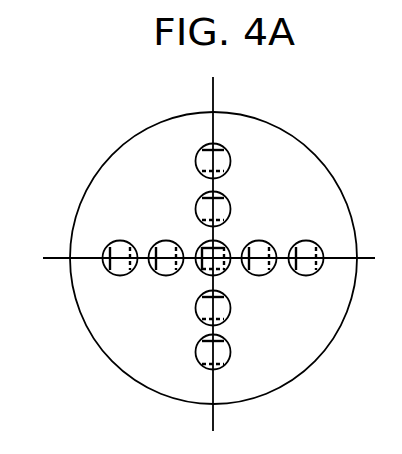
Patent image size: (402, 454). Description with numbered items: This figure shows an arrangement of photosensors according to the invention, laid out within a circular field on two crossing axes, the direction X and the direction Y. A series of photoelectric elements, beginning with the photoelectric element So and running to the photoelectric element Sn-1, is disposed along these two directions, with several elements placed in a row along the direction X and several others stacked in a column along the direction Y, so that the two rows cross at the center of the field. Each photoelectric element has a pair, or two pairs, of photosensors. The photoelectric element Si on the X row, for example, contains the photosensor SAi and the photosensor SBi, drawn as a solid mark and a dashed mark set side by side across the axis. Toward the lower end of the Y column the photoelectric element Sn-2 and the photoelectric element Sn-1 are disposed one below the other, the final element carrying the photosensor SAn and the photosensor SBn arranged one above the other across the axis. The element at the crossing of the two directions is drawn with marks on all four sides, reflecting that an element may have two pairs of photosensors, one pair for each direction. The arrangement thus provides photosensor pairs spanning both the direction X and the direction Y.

The direction X is at (209, 260).
The direction Y is at (211, 240).
The photoelectric element So is at (122, 276).
The photoelectric element Si is at (257, 241).
The photosensor SAi is at (249, 271).
The photosensor SBi is at (269, 271).
The photoelectric element Sn-2 is at (196, 303).
The photoelectric element Sn-1 is at (196, 352).
The photosensor SAn is at (218, 341).
The photosensor SBn is at (222, 364).